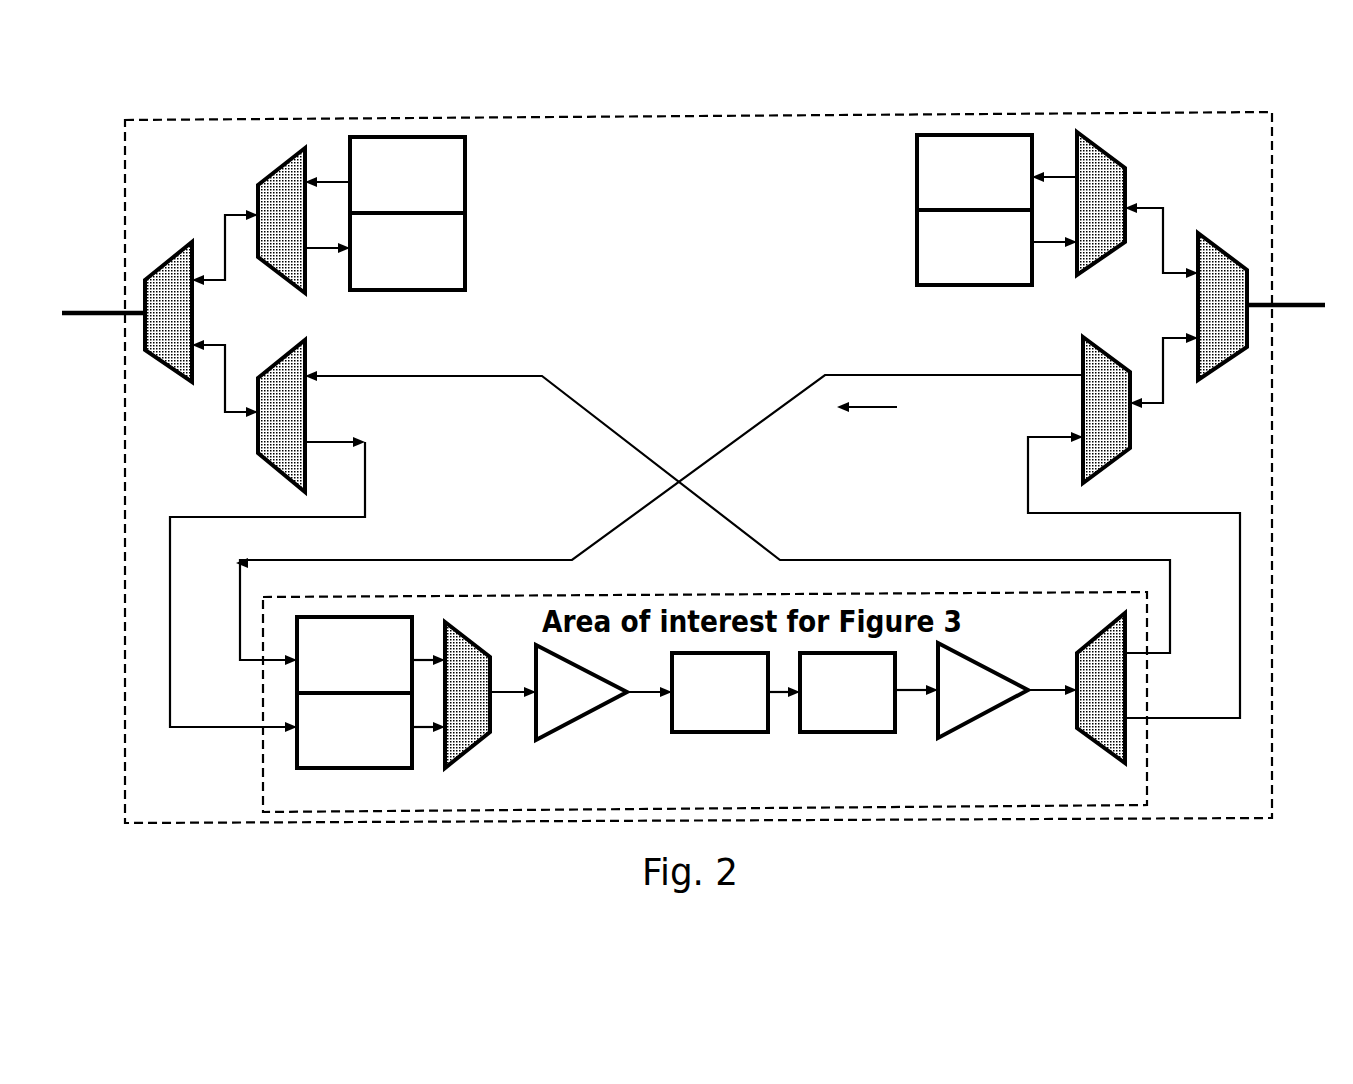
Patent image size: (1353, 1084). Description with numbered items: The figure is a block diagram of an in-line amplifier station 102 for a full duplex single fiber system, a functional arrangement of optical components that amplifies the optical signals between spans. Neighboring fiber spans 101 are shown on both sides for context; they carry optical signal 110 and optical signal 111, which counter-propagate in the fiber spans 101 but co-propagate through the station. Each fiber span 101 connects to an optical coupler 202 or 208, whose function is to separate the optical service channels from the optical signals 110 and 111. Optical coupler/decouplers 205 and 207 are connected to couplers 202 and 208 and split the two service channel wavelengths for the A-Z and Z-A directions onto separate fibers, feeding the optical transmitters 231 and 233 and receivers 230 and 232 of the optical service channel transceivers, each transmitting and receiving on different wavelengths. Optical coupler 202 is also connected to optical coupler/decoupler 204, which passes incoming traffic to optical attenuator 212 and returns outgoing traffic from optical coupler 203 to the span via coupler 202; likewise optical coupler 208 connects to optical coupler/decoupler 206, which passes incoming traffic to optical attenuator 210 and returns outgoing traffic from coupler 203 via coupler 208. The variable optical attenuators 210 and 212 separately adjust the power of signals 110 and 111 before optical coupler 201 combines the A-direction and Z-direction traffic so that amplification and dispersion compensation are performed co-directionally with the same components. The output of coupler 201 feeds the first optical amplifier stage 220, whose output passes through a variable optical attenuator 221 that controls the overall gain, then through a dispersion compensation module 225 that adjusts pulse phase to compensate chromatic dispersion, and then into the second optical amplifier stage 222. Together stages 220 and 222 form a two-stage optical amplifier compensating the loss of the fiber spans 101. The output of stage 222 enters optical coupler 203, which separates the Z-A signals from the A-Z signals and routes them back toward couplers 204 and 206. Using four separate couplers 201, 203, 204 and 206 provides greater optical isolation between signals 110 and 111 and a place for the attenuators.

The fiber spans 101 is at (693, 288).
The in-line amplifier station 102 is at (698, 467).
The optical signal 110 is at (705, 582).
The optical signal 111 is at (703, 510).
The optical coupler 201 is at (471, 721).
The optical coupler 202 is at (171, 342).
The optical coupler 203 is at (1094, 714).
The optical coupler/decoupler 204 is at (255, 424).
The optical coupler/decoupler 205 is at (254, 216).
The optical coupler/decoupler 206 is at (1132, 418).
The optical coupler/decoupler 207 is at (1136, 203).
The optical coupler 208 is at (1221, 334).
The optical attenuator 210 is at (371, 655).
The optical attenuator 212 is at (371, 730).
The optical amplifier stage 220 is at (558, 692).
The variable optical attenuator 221 is at (697, 692).
The optical amplifier stage 222 is at (986, 690).
The dispersion compensation module 225 is at (831, 692).
The receiver 230 is at (385, 251).
The optical transmitter 231 is at (385, 175).
The receiver 232 is at (997, 247).
The optical transmitter 233 is at (997, 172).